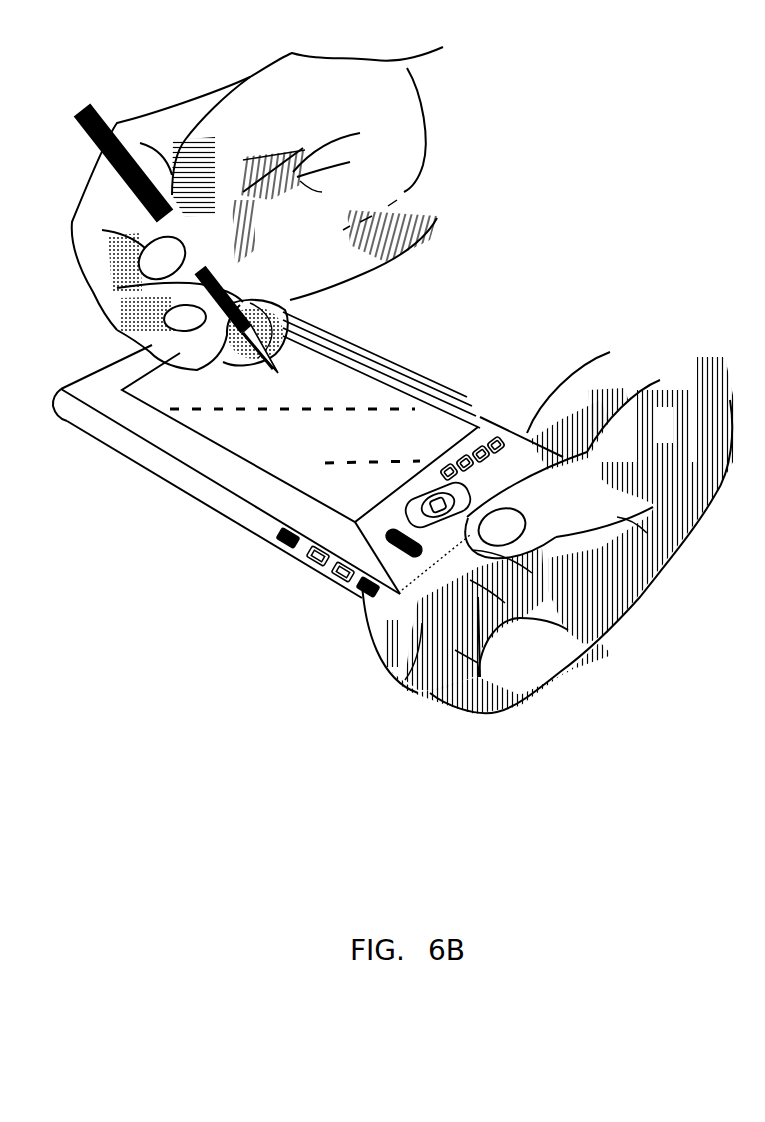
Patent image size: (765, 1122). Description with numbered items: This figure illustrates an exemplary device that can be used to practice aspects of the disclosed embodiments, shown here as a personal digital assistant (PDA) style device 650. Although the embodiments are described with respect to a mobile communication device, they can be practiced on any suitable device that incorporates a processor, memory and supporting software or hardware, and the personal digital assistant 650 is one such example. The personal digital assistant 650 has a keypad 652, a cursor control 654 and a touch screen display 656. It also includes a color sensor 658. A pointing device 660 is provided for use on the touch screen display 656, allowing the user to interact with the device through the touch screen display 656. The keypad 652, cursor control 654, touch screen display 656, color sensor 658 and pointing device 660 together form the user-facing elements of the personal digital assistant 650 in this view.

The personal digital assistant (PDA) style device 650 is at (334, 486).
The keypad 652 is at (492, 445).
The cursor control 654 is at (355, 524).
The touch screen display 656 is at (355, 382).
The color sensor 658 is at (282, 543).
The pointing device 660 is at (86, 108).